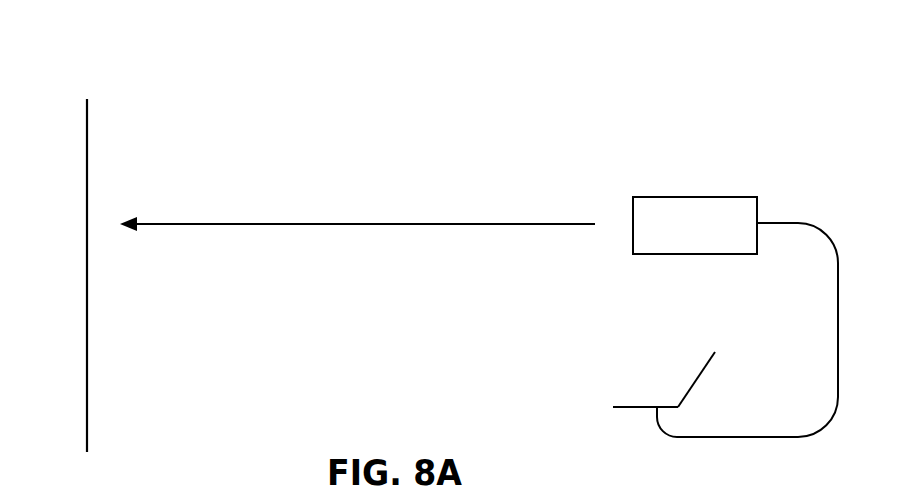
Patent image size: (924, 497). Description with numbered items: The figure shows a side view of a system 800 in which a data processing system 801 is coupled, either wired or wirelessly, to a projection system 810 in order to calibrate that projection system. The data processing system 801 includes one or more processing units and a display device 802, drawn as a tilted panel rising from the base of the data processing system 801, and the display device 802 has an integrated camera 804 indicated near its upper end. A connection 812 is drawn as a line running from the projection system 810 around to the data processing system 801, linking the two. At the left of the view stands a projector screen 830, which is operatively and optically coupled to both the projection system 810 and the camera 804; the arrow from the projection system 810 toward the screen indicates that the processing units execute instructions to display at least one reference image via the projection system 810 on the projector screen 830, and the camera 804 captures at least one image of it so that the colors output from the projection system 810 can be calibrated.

The system 800 is at (636, 83).
The data processing system 801 is at (643, 407).
The display device 802 is at (699, 385).
The integrated camera 804 is at (706, 360).
The projection system 810 is at (695, 225).
The cable 812 is at (840, 315).
The projector screen 830 is at (86, 179).